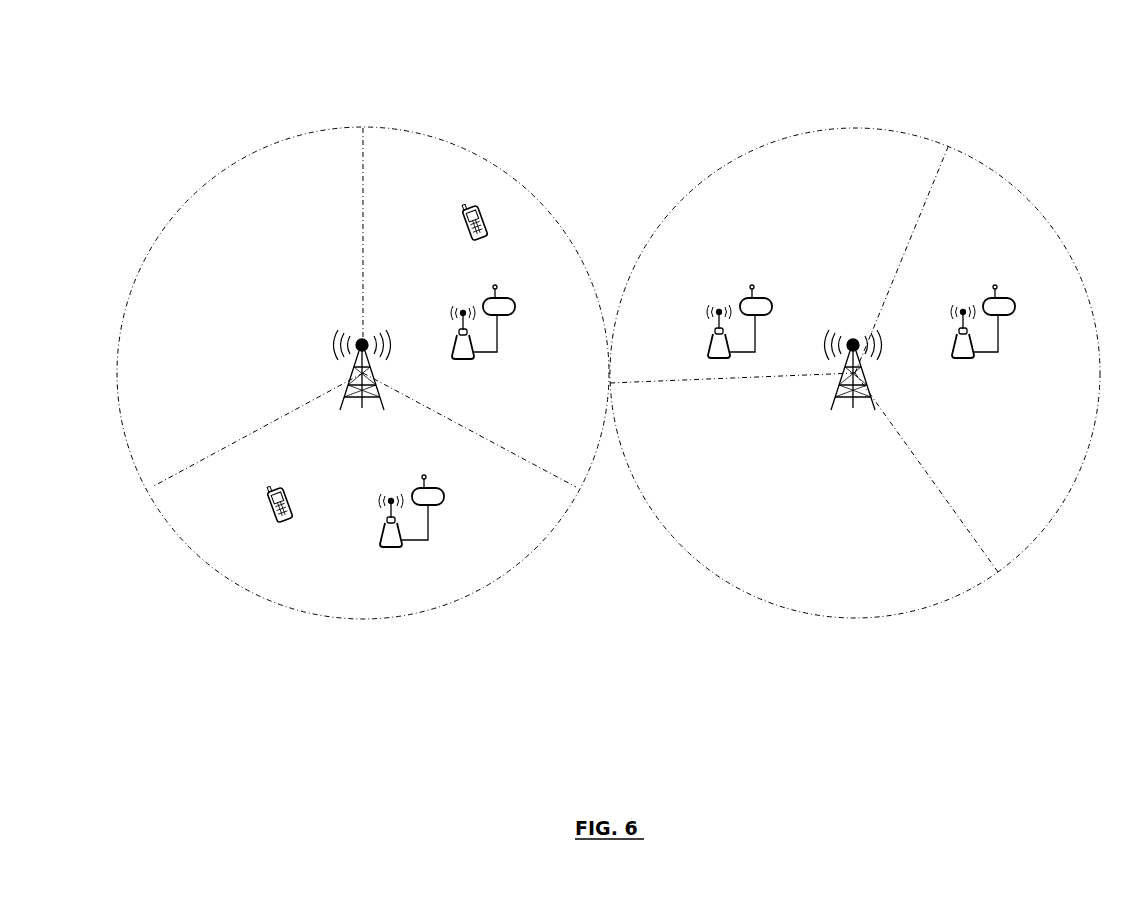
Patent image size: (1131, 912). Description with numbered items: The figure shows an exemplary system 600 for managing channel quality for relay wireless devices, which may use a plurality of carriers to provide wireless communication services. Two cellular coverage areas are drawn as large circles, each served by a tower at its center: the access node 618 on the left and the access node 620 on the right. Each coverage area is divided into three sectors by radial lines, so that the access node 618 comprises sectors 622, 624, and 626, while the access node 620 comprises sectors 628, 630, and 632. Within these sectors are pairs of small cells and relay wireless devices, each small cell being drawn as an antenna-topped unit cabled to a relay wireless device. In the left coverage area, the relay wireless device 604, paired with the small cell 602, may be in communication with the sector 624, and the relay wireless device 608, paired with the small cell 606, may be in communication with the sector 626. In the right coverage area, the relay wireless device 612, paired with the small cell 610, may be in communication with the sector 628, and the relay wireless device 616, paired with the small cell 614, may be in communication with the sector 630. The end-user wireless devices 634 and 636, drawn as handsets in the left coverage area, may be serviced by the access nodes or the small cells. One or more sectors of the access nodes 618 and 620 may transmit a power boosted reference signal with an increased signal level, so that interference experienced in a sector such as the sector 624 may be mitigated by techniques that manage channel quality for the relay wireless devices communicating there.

The system 600 is at (620, 78).
The small cell 602 is at (459, 330).
The relay wireless device 604 is at (513, 297).
The small cell 606 is at (386, 519).
The relay wireless device 608 is at (443, 490).
The small cell 610 is at (716, 331).
The relay wireless device 612 is at (773, 300).
The small cell 614 is at (958, 331).
The relay wireless device 616 is at (1013, 298).
The access node 618 is at (362, 408).
The access node 620 is at (853, 408).
The sector 622 is at (145, 248).
The sector 624 is at (507, 173).
The sector 626 is at (508, 572).
The sector 628 is at (700, 183).
The sector 630 is at (1054, 227).
The sector 632 is at (860, 622).
The wireless device 634 is at (470, 238).
The wireless device 636 is at (275, 520).